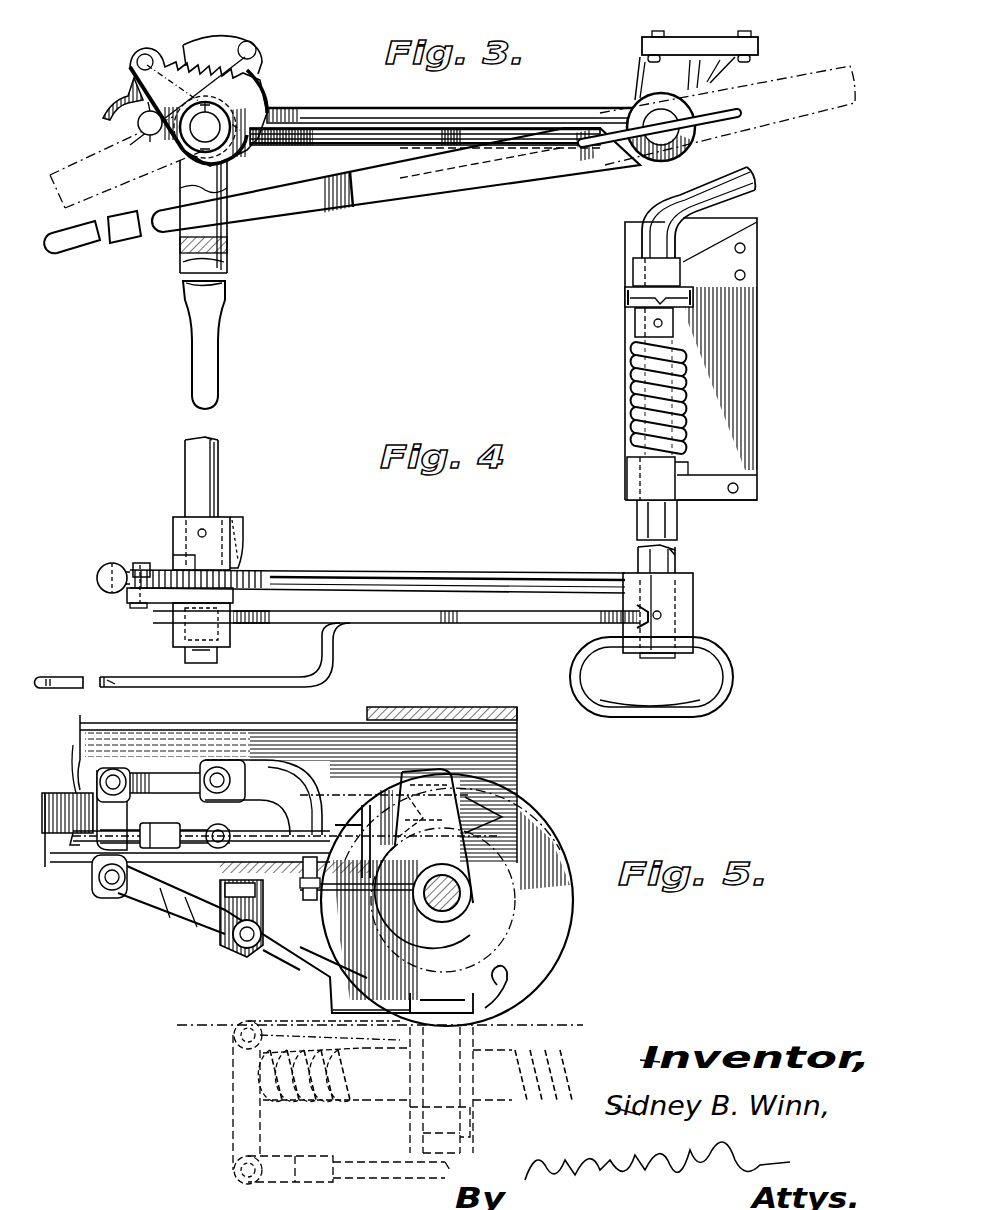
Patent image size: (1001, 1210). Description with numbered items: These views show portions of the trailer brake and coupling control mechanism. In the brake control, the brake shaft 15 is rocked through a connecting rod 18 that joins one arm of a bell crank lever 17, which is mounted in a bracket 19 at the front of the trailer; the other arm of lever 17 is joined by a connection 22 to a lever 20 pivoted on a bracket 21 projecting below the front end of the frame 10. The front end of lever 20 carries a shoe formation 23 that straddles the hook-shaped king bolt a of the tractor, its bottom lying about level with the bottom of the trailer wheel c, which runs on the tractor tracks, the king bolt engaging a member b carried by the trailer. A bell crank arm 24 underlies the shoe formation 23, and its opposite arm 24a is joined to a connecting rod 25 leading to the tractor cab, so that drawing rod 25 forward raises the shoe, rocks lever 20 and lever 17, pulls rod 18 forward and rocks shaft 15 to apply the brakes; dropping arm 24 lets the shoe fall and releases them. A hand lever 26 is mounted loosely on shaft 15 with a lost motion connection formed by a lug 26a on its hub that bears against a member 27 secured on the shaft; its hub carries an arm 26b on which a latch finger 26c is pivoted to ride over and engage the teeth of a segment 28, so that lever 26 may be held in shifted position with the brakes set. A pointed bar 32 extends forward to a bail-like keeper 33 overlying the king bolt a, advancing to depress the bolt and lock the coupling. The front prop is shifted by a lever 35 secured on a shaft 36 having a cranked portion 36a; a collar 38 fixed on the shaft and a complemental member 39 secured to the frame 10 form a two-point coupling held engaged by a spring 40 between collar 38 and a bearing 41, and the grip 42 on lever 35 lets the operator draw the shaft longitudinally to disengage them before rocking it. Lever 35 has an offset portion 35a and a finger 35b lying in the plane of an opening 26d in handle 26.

In FIG. 5, the frame 10 is at (310, 735).
In FIG. 3, the shaft 15 is at (212, 129).
In FIG. 4, the shaft 15 is at (210, 481).
In FIG. 5, the bell crank lever 17 is at (168, 778).
In FIG. 5, the connecting rod 18 is at (88, 840).
In FIG. 5, the bracket 19 is at (315, 808).
In FIG. 5, the lever 20 is at (155, 912).
In FIG. 5, the bracket 21 is at (242, 945).
In FIG. 5, the connection 22 is at (103, 815).
In FIG. 5, the shoe formation 23 is at (493, 990).
In FIG. 5, the arm 24 is at (285, 1025).
In FIG. 5, the arm 24a is at (233, 1115).
In FIG. 5, the connecting rod 25 is at (372, 1162).
In FIG. 3, the lever 26 is at (214, 298).
In FIG. 3, the lug construction 26a is at (182, 172).
In FIG. 4, the lug construction 26a is at (180, 563).
In FIG. 3, the arm 26b is at (140, 117).
In FIG. 4, the arm 26b is at (155, 598).
In FIG. 3, the latch finger 26c is at (118, 95).
In FIG. 4, the latch finger 26c is at (112, 572).
In FIG. 3, the recess or opening 26d is at (215, 233).
In FIG. 4, the member 27 is at (243, 537).
In FIG. 3, the segment 28 is at (268, 85).
In FIG. 4, the segment 28 is at (250, 578).
In FIG. 5, the bar 32 is at (361, 840).
In FIG. 5, the keeper 33 is at (438, 891).
In FIG. 3, the lever 35 is at (447, 180).
In FIG. 4, the lever 35 is at (445, 625).
In FIG. 4, the offset portion 35a is at (228, 689).
In FIG. 4, the finger 35b is at (272, 623).
In FIG. 3, the shaft 36 is at (648, 160).
In FIG. 4, the shaft 36 is at (656, 559).
In FIG. 3, the cranked portion 36a is at (756, 193).
In FIG. 3, the collar 38 is at (650, 323).
In FIG. 3, the complemental member 39 is at (650, 273).
In FIG. 3, the spring 40 is at (637, 397).
In FIG. 3, the bearing 41 is at (647, 472).
In FIG. 3, the grip 42 is at (722, 135).
In FIG. 4, the grip 42 is at (645, 705).
In FIG. 5, the king bolt a is at (490, 938).
In FIG. 5, the member b is at (462, 898).
In FIG. 5, the wheels c is at (572, 916).